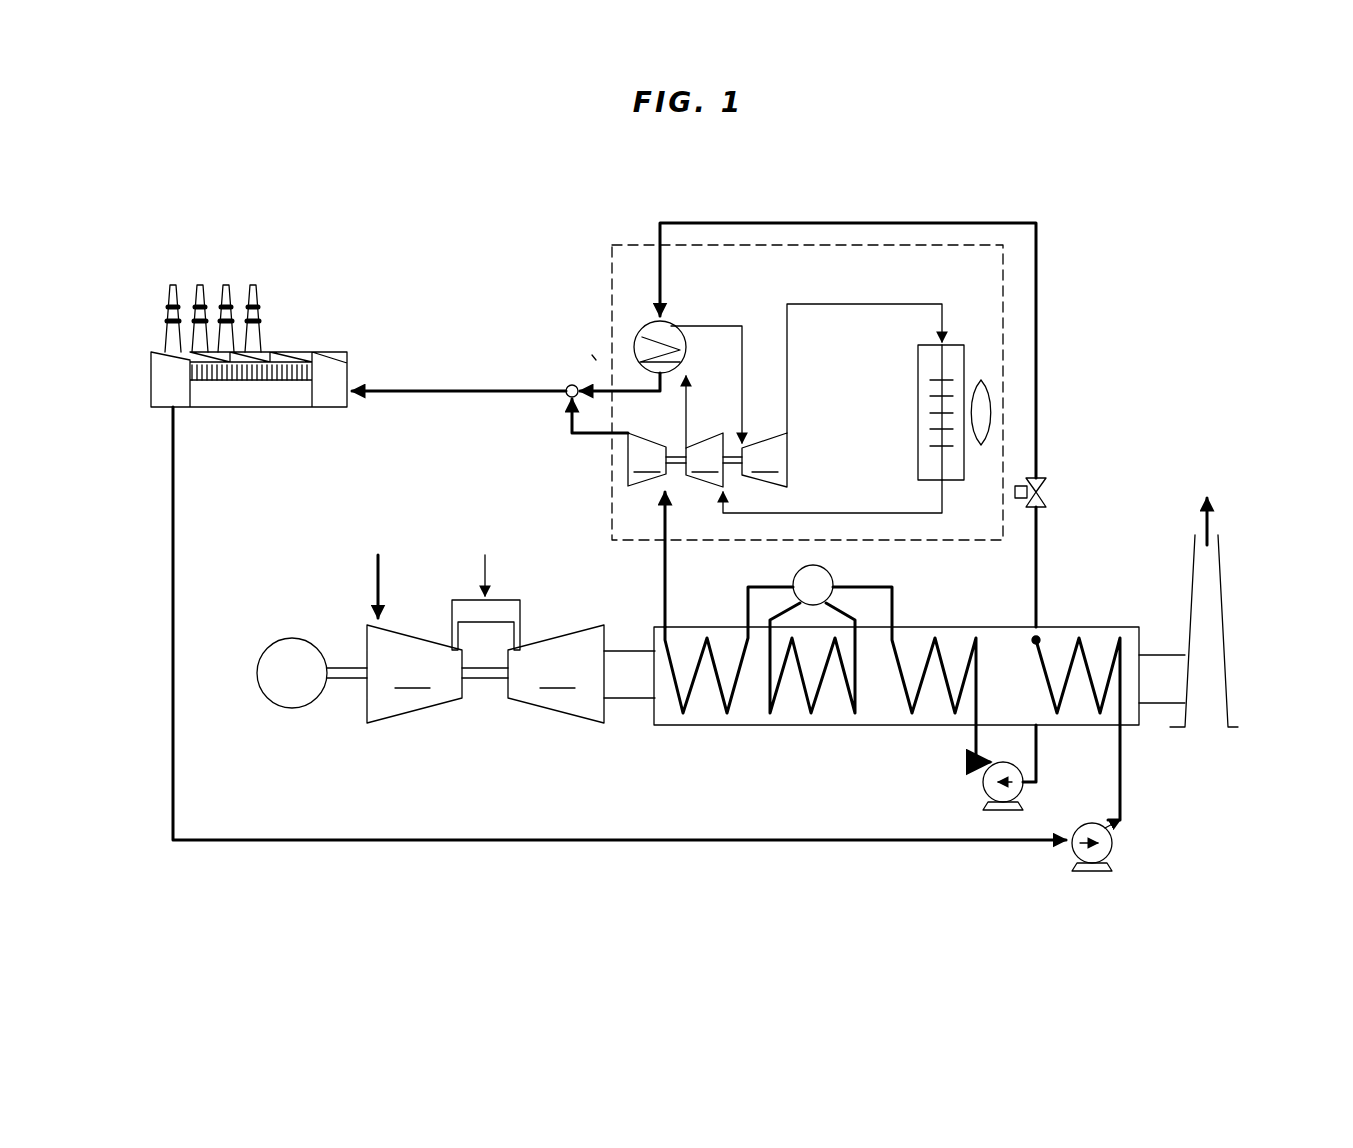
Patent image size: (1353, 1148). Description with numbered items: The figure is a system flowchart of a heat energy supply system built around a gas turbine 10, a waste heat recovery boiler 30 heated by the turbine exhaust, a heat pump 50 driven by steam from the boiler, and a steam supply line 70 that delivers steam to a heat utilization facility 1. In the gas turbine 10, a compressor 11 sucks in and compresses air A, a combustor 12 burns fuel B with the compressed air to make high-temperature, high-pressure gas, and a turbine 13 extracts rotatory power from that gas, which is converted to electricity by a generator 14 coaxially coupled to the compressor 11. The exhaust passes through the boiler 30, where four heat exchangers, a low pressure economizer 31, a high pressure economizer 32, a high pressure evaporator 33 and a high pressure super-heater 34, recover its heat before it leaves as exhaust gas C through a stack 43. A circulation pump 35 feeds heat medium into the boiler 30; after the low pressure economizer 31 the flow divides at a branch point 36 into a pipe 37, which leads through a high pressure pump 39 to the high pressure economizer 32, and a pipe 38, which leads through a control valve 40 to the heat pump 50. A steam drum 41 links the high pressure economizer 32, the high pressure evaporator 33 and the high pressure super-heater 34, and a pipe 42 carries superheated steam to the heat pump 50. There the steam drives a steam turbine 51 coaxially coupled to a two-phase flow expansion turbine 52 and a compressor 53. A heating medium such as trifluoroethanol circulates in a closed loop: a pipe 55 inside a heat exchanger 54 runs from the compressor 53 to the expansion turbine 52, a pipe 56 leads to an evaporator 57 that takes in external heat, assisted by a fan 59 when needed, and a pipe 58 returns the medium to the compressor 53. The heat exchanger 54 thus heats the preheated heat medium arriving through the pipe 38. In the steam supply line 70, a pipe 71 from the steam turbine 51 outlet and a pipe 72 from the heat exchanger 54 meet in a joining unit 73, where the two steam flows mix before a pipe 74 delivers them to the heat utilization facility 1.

The heat utilization facility 1 is at (299, 352).
The gas turbine 10 is at (456, 667).
The compressor 11 is at (414, 674).
The combustor 12 is at (512, 600).
The turbine 13 is at (556, 674).
The generator 14 is at (298, 638).
The boiler 30 is at (919, 684).
The low pressure economizer 31 is at (1083, 640).
The high pressure economizer 32 is at (908, 725).
The high pressure evaporator 33 is at (810, 725).
The high pressure super-heater 34 is at (685, 725).
The circulation pump 35 is at (1113, 846).
The branch point 36 is at (1030, 636).
The pipe 37 is at (1036, 756).
The pipe 38 is at (1038, 539).
The high pressure pump 39 is at (985, 790).
The control valve 40 is at (1044, 490).
The steam drum 41 is at (798, 575).
The pipe 42 is at (664, 586).
The stack 43 is at (1222, 582).
The heat pump 50 is at (636, 245).
The steam turbine 51 is at (647, 459).
The two-phase flow expansion turbine 52 is at (764, 460).
The compressor 53 is at (704, 460).
The heat exchanger 54 is at (636, 338).
The pipe 55 is at (732, 326).
The pipe 56 is at (872, 304).
The evaporator 57 is at (918, 364).
The pipe 58 is at (842, 513).
The fan 59 is at (981, 380).
The steam supply line 70 is at (528, 368).
The pipe 71 is at (576, 436).
The pipe 72 is at (598, 388).
The joining unit 73 is at (565, 396).
The pipe 74 is at (418, 389).